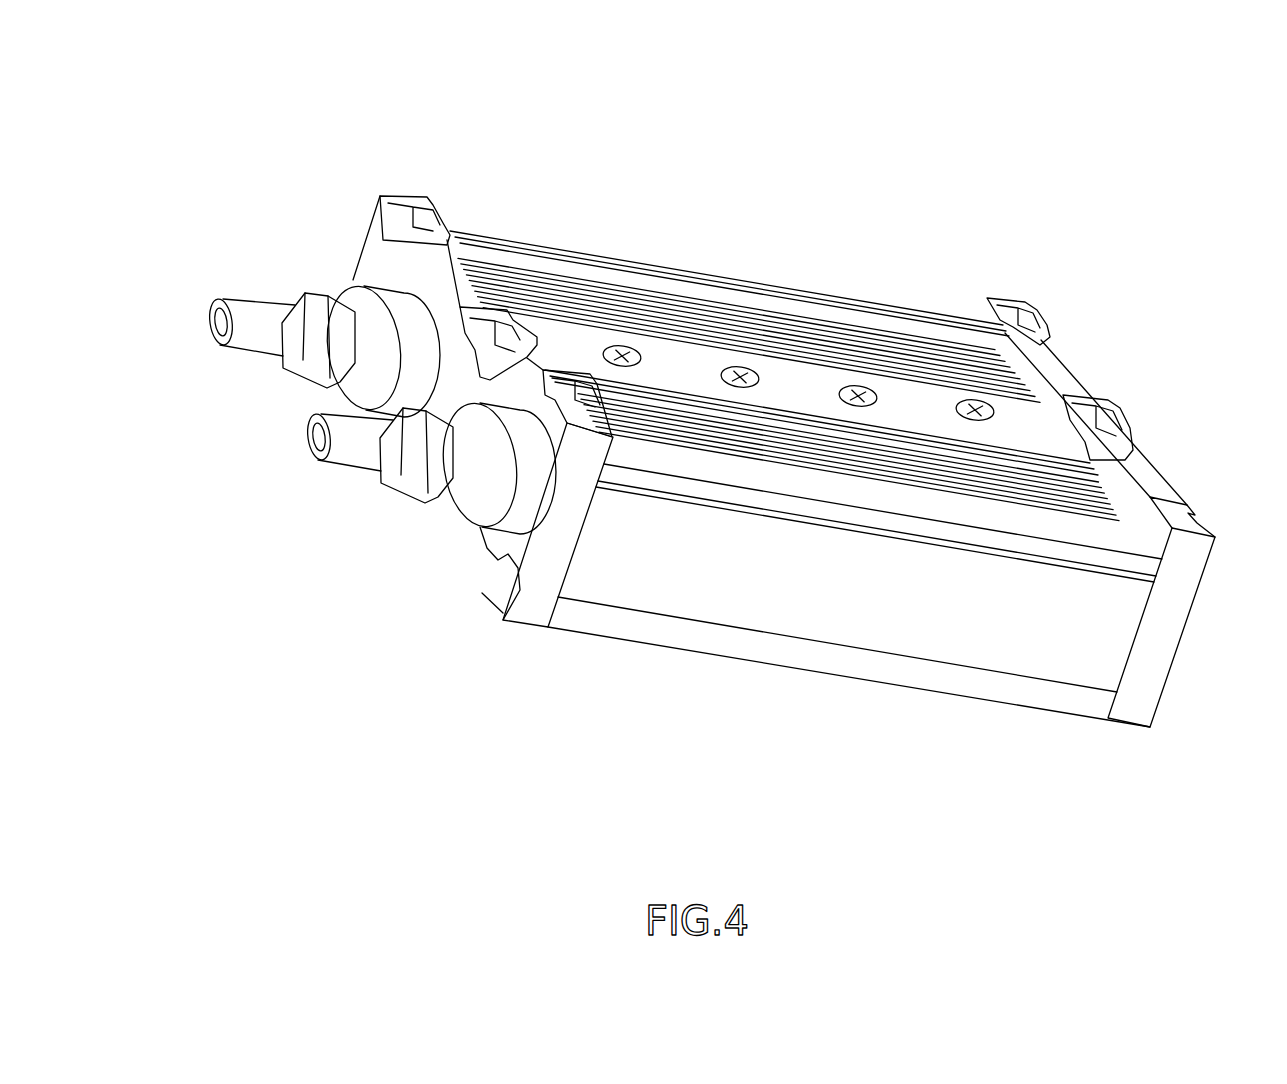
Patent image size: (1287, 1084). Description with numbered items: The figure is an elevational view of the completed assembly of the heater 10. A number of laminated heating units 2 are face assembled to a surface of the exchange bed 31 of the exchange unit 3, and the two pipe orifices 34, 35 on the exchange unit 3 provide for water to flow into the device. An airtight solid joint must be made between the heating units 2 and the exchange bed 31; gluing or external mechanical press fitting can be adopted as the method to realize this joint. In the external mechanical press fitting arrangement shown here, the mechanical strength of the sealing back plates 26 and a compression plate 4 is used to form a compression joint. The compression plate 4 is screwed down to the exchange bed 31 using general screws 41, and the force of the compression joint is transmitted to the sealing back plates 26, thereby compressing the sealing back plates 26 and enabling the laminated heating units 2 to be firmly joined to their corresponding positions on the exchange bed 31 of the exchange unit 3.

The heater 10 is at (306, 178).
The laminated heating unit 2 is at (692, 414).
The sealing back plate 26 is at (592, 295).
The exchange unit 3 is at (708, 665).
The exchange bed 31 is at (898, 638).
The pipe orifice 34 is at (253, 318).
The pipe orifice 35 is at (358, 453).
The compression plate 4 is at (898, 395).
The screw 41 is at (980, 407).